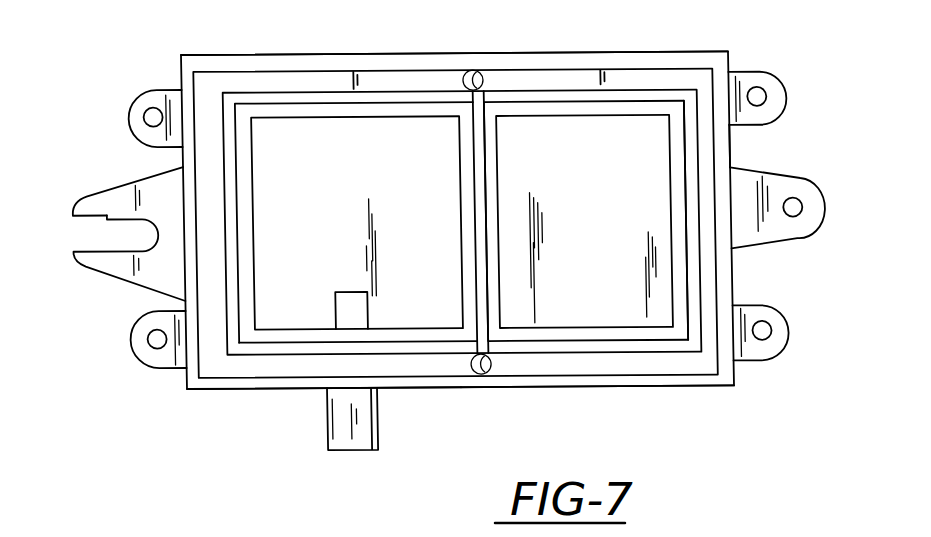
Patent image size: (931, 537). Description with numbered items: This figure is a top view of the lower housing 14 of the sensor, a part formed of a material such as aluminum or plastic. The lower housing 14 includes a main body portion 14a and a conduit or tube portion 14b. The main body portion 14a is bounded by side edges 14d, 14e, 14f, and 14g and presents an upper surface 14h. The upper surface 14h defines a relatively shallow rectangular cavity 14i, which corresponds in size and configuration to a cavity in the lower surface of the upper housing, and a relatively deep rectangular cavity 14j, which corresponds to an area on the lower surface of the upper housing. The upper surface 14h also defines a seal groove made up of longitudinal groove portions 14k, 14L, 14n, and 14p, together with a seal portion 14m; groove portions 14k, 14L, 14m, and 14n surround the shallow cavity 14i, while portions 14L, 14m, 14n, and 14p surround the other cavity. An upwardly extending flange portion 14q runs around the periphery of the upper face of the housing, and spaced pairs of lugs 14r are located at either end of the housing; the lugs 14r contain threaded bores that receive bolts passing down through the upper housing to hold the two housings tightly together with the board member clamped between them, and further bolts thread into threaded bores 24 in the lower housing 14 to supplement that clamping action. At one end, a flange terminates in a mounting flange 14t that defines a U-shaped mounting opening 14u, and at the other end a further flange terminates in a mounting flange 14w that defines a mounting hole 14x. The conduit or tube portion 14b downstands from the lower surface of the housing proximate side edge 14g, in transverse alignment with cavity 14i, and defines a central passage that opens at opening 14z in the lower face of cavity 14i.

The lower housing 14 is at (191, 402).
The main body portion 14a is at (503, 42).
The conduit or tube portion 14b is at (380, 428).
The side edge 14d is at (181, 276).
The side edge 14e is at (390, 53).
The side edge 14f is at (732, 148).
The side edge 14g is at (620, 388).
The upper surface 14h is at (613, 170).
The shallow rectangular cavity 14i is at (460, 202).
The deep rectangular cavity 14j is at (590, 326).
The longitudinal groove portion 14k is at (284, 102).
The longitudinal groove portion 14L is at (305, 345).
The seal portion 14m is at (235, 213).
The longitudinal groove portion 14n is at (471, 250).
The longitudinal groove portion 14p is at (679, 209).
The flange portion 14q is at (306, 388).
The lug 14r is at (137, 104).
The mounting flange 14t is at (148, 173).
The U-shaped mounting opening 14u is at (107, 218).
The mounting flange 14w is at (783, 233).
The mounting hole 14x is at (790, 198).
The opening 14z is at (368, 318).
The threaded bore 24 is at (468, 89).